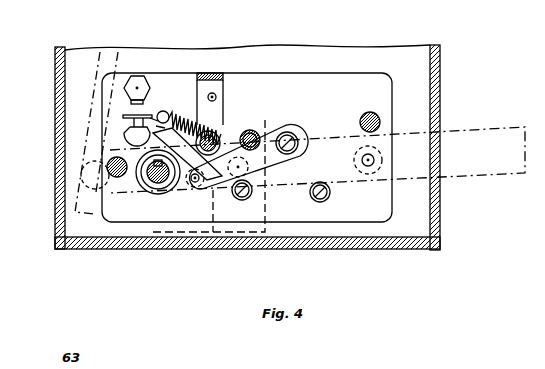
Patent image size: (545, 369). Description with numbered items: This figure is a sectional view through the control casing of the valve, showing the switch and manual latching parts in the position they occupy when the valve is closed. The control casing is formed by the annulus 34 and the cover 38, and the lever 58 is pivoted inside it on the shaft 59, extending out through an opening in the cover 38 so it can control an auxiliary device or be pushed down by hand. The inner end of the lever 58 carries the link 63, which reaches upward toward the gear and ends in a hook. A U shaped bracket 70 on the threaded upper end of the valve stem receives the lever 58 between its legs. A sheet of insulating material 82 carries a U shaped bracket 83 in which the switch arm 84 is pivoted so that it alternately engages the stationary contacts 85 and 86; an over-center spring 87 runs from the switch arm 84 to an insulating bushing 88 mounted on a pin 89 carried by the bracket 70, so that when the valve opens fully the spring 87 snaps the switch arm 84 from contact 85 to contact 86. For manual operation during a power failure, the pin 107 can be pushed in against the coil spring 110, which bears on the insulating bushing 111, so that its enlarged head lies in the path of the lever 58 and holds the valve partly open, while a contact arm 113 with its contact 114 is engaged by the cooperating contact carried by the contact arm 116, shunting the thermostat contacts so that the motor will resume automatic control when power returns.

The annulus 34 is at (441, 246).
The cover 38 is at (438, 72).
The lever 58 is at (500, 124).
The shaft 59 is at (380, 160).
The link 63 is at (98, 65).
The U shaped bracket 70 is at (268, 181).
The sheet of insulating material 82 is at (343, 82).
The U shaped bracket 83 is at (222, 88).
The switch arm 84 is at (185, 116).
The stationary contact 85 is at (140, 123).
The stationary contact 86 is at (149, 99).
The over-center spring 87 is at (232, 127).
The insulating bushing 88 is at (251, 131).
The pin 89 is at (262, 139).
The pin 107 is at (142, 192).
The coil spring 110 is at (155, 196).
The insulating bushing 111 is at (181, 193).
The contact arm 113 is at (240, 199).
The contact 114 is at (225, 224).
The cooperating contact arm 116 is at (117, 130).